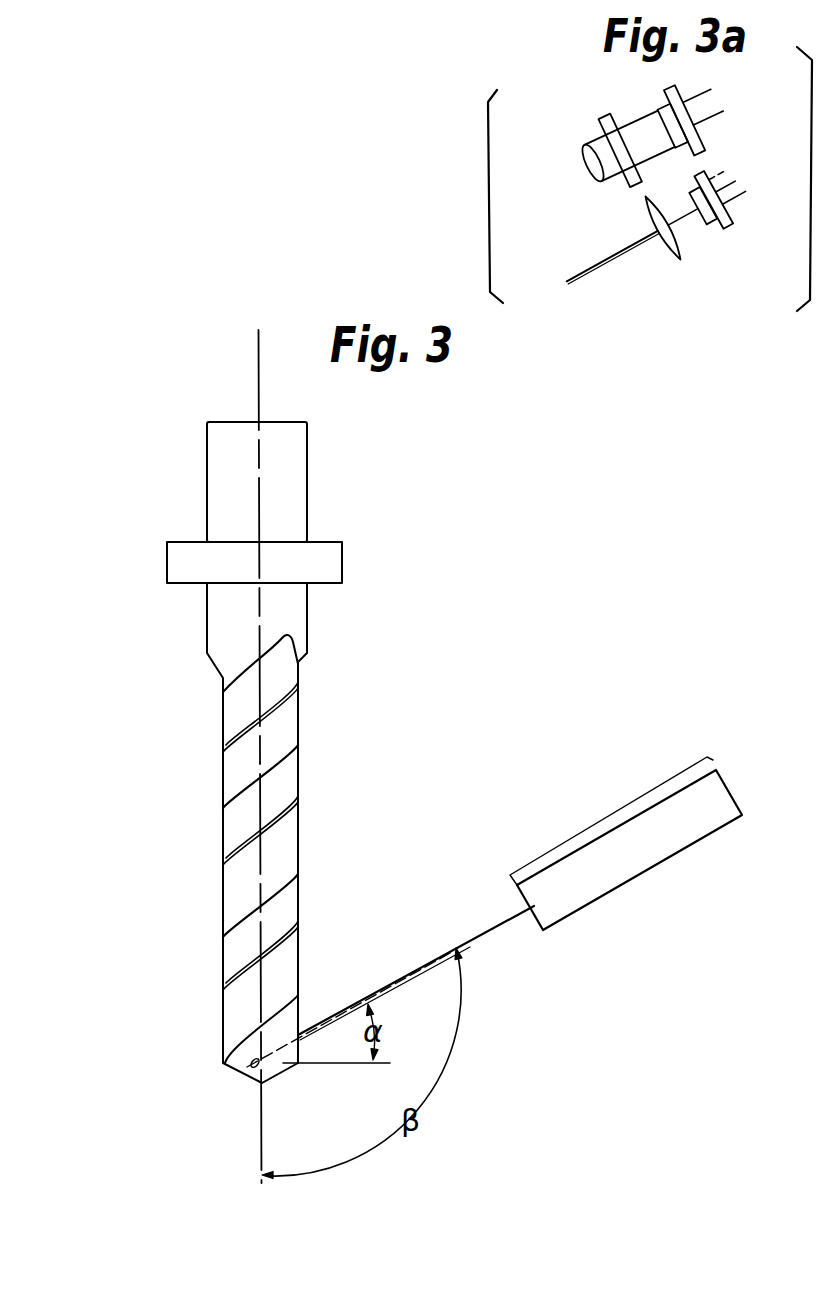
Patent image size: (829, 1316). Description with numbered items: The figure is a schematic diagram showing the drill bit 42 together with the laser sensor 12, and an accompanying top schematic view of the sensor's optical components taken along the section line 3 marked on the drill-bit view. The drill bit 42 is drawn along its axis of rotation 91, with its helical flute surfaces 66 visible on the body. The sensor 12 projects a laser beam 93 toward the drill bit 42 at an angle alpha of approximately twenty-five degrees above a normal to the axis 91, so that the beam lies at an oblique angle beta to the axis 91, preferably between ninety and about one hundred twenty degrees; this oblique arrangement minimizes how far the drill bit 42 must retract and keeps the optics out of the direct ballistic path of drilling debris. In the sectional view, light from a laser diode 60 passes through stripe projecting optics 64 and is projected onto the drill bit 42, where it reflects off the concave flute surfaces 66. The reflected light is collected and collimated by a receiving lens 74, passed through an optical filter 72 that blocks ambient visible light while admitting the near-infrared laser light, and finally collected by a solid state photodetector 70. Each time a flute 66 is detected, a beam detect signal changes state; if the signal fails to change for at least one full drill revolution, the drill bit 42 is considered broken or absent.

In FIG. 3, the axis of rotation 91 is at (246, 371).
In FIG. 3, the drill bit 42 is at (191, 752).
In FIG. 3, the flute surfaces 66 is at (242, 808).
In FIG. 3, the laser beam 93 is at (384, 977).
In FIG. 3, the sensor 12 is at (634, 886).
In FIG. 3, the line 3— 3 is at (507, 910).
In FIG. 3a, the receiving lens 74 is at (578, 155).
In FIG. 3a, the optical filter 72 is at (620, 116).
In FIG. 3a, the solid state photodetector 70 is at (678, 86).
In FIG. 3a, the stripe projecting optics 64 is at (670, 244).
In FIG. 3a, the laser diode 60 is at (726, 223).